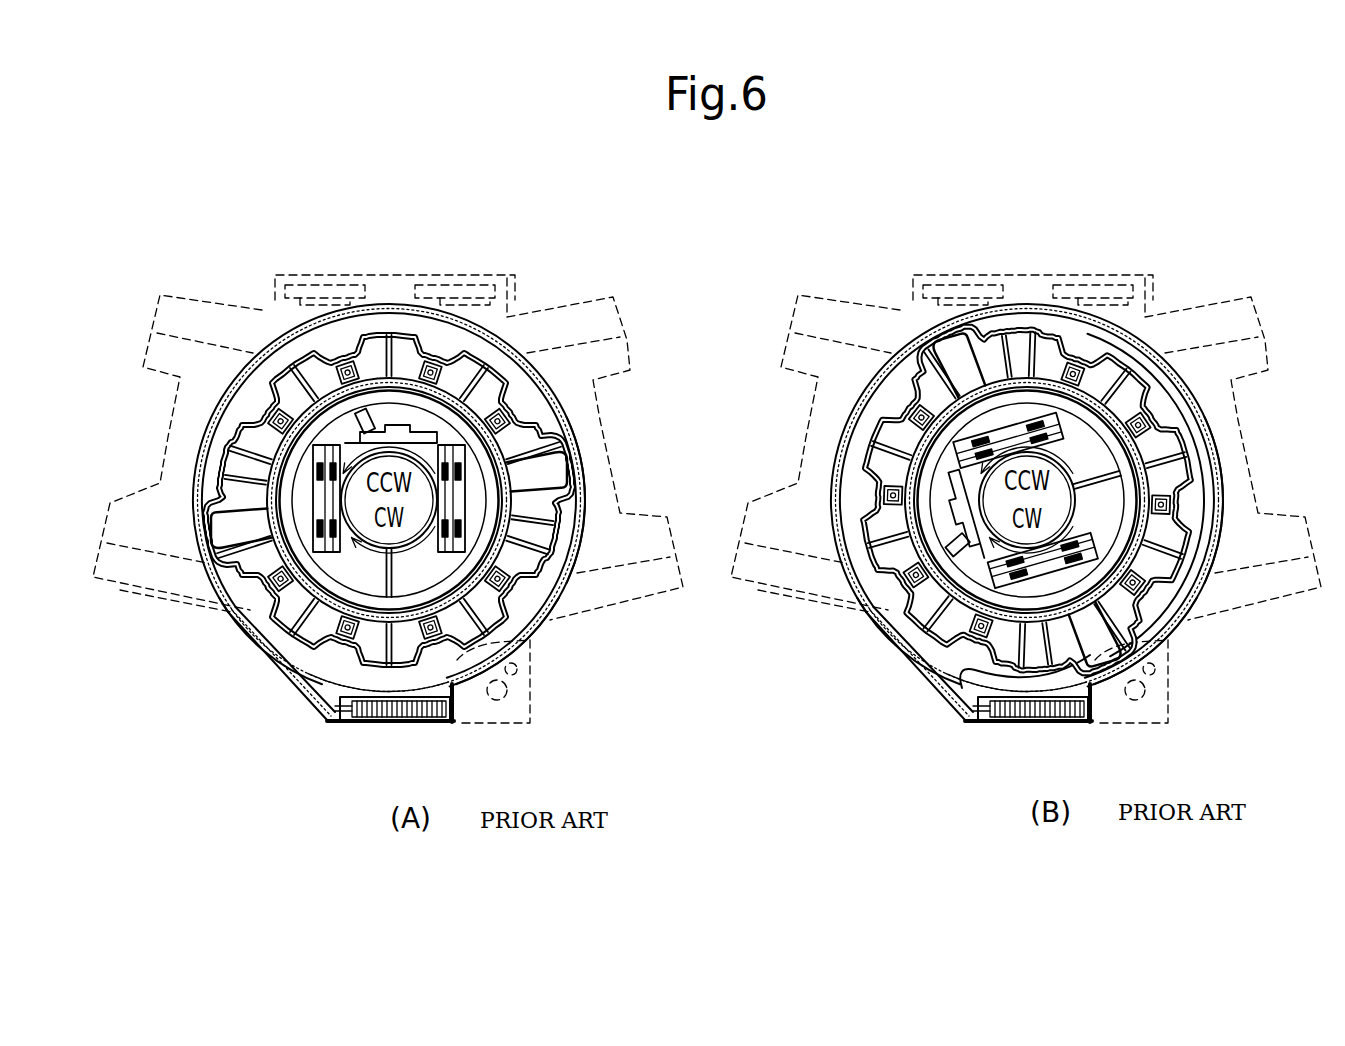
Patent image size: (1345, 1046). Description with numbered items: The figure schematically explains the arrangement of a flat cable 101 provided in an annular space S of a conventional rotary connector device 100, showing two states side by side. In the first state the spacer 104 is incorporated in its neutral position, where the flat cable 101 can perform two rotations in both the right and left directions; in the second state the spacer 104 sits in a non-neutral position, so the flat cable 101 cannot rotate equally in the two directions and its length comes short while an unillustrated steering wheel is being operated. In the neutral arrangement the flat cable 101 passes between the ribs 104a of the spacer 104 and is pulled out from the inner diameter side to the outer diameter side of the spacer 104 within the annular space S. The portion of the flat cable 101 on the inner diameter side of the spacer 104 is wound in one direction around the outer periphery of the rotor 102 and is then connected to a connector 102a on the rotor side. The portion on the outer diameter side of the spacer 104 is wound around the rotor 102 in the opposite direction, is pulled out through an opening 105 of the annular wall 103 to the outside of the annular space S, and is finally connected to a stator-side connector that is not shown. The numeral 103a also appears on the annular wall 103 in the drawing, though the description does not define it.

The rotary connector device 100 is at (536, 285).
The flat cable 101 is at (192, 532).
The rotor 102 is at (262, 440).
The connector 102a is at (318, 492).
The annular wall 103 is at (245, 630).
The frame side portion 103a is at (567, 546).
The spacer 104 is at (527, 622).
The ribs 104a is at (578, 437).
The opening 105 is at (290, 678).
The annular space S is at (544, 602).